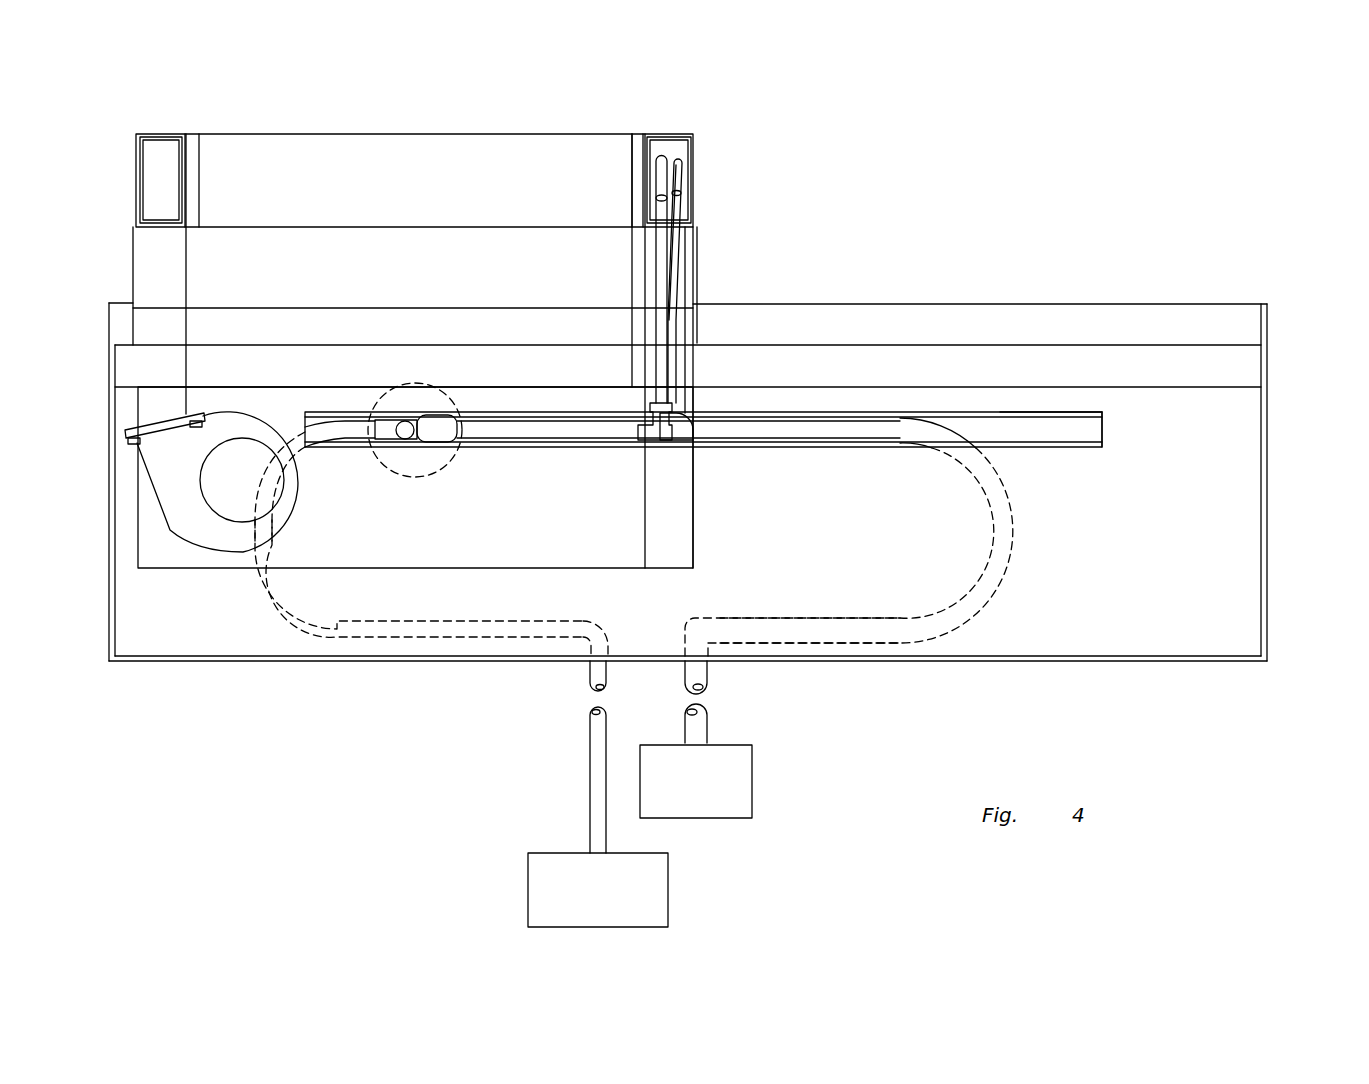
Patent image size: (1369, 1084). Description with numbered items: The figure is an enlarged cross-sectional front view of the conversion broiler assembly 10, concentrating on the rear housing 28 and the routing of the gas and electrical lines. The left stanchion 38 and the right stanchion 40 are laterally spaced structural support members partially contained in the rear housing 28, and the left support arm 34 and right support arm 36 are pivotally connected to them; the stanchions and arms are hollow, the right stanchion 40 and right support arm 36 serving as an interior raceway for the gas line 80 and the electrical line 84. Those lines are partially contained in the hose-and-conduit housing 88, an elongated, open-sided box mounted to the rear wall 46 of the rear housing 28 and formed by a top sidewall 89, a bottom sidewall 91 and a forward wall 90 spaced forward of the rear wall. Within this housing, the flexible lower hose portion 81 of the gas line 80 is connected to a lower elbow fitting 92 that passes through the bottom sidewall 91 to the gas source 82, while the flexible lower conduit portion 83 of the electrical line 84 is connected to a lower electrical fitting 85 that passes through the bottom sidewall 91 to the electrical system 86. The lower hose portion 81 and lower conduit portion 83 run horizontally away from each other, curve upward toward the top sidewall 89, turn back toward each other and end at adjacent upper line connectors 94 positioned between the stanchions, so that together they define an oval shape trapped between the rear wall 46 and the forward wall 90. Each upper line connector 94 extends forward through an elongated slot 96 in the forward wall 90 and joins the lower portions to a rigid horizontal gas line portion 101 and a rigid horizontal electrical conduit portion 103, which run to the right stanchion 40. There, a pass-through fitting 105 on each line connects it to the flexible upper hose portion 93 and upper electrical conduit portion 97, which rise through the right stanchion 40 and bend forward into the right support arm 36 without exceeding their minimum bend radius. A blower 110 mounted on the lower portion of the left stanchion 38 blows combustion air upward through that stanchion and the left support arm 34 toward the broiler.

The conversion broiler assembly 10 is at (516, 150).
The rear housing 28 is at (1160, 304).
The left support arm 34 is at (157, 137).
The right support arm 36 is at (672, 138).
The left stanchion 38 is at (190, 134).
The right stanchion 40 is at (655, 135).
The rear wall 46 is at (1243, 371).
The gas line 80 is at (676, 252).
The lower hose portion 81 is at (988, 578).
The gas source 82 is at (753, 775).
The lower conduit portion 83 is at (275, 604).
The electrical line 84 is at (706, 272).
The lower electrical fitting 85 is at (601, 629).
The electrical system 86 is at (528, 894).
The hose-and-conduit housing 88 is at (1245, 540).
The top sidewall 89 is at (997, 387).
The forward wall 90 is at (1228, 456).
The bottom sidewall 91 is at (1130, 656).
The lower elbow fitting 92 is at (690, 629).
The upper hose portion 93 is at (657, 279).
The upper line connectors 94 is at (398, 440).
The elongated slot 96 is at (1095, 448).
The upper electrical conduit portion 97 is at (688, 291).
The rigid horizontal gas line portion 101 is at (530, 443).
The rigid horizontal electrical conduit portion 103 is at (563, 430).
The pass-through fitting 105 is at (650, 406).
The blower 110 is at (303, 515).